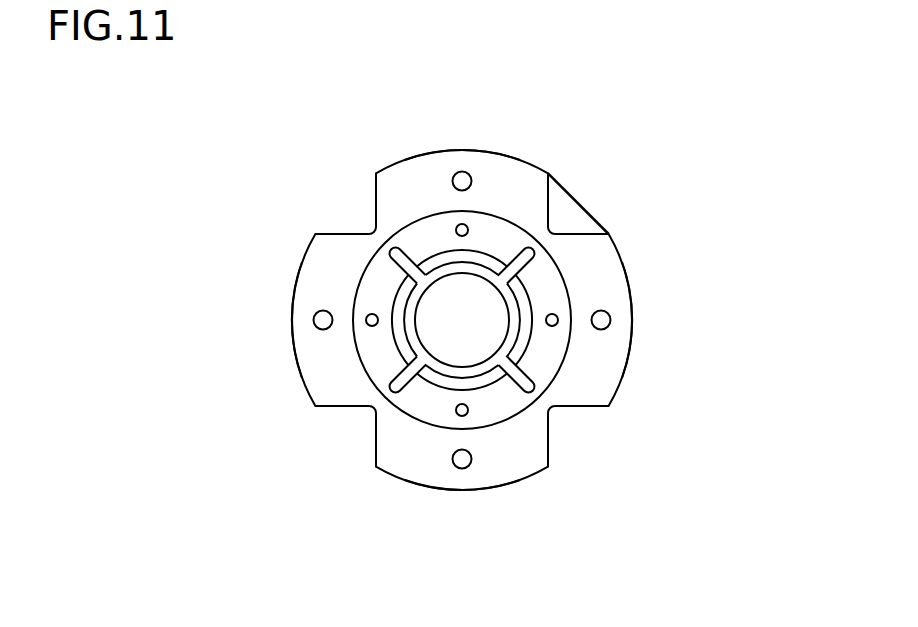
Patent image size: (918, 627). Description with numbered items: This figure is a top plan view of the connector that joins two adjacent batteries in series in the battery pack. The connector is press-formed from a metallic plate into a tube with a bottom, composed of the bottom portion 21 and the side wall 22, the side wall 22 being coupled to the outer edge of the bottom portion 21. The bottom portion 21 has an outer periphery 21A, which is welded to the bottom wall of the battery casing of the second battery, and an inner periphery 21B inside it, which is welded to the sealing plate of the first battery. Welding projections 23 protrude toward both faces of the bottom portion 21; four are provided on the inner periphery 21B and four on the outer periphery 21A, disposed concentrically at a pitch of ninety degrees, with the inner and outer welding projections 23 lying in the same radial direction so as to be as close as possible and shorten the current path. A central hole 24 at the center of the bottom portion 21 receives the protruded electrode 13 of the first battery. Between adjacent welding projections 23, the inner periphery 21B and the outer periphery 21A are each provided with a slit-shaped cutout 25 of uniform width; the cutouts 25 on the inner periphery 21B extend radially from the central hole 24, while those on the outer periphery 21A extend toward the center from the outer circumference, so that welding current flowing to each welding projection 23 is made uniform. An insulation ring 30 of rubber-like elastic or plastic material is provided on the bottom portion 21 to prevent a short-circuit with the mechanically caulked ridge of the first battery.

The protruded electrode 13 is at (438, 318).
The bottom portion 21 is at (540, 320).
The outer periphery 21A is at (590, 347).
The inner periphery 21B is at (548, 288).
The side wall 22 is at (436, 150).
The welding projections 23 is at (468, 174).
The central hole 24 is at (513, 336).
The cutout 25 is at (575, 196).
The insulation ring 30 is at (573, 218).